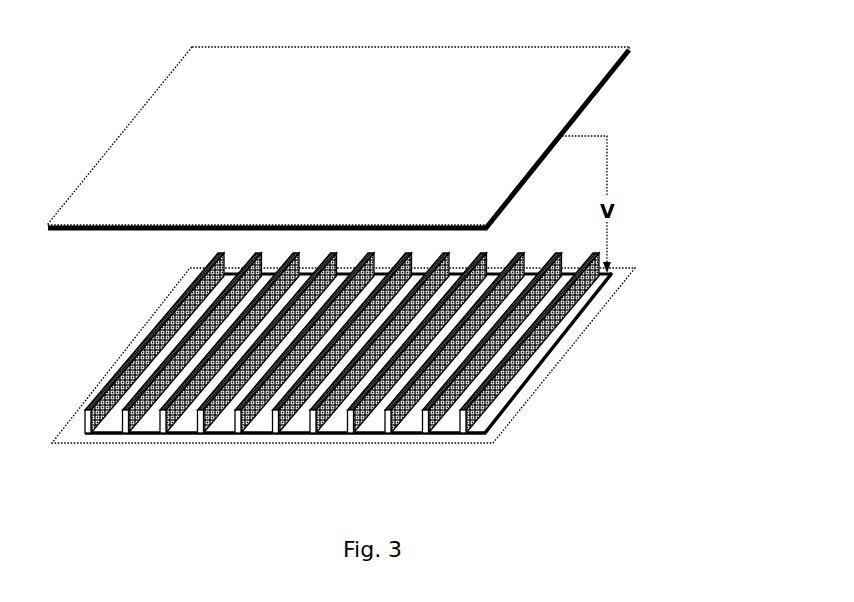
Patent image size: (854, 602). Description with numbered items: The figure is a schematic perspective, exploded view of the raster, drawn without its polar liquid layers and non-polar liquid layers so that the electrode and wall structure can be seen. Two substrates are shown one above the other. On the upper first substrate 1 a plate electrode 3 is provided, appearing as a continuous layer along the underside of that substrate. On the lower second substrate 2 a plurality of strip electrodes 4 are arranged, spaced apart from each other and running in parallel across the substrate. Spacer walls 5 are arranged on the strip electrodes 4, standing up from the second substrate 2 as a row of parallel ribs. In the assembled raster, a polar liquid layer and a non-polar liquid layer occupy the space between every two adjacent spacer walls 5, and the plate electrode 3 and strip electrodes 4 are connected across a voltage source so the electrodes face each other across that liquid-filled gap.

The first substrate 1 is at (595, 61).
The second substrate 2 is at (442, 440).
The plate electrode 3 is at (600, 84).
The strip electrodes 4 is at (348, 428).
The spacer walls 5 is at (522, 345).